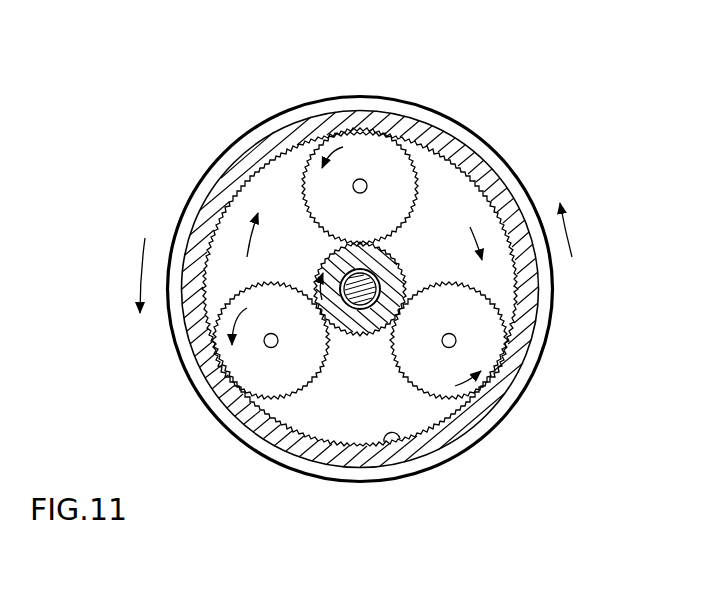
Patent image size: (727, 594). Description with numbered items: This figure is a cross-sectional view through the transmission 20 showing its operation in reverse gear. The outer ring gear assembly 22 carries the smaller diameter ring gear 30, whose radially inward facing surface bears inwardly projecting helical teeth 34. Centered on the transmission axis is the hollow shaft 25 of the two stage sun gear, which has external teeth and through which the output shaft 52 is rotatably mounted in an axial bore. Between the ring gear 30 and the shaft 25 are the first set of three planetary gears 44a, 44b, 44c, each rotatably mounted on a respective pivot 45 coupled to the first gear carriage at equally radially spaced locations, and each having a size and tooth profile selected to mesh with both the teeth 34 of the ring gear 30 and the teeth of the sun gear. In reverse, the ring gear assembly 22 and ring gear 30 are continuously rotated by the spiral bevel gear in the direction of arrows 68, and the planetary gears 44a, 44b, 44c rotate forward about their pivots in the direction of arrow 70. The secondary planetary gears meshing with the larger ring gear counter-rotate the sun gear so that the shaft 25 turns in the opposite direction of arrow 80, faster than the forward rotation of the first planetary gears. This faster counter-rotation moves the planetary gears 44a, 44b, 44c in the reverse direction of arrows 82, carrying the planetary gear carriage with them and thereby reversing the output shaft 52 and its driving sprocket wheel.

The transmission 20 is at (522, 117).
The ring gear assembly 22 is at (490, 440).
The hollow shaft 25 is at (382, 258).
The ring gear 30 is at (362, 463).
The helical teeth 34 is at (405, 452).
The planetary gear 44a is at (385, 150).
The planetary gear 44b is at (483, 332).
The planetary gear 44c is at (267, 387).
The pivot 45 is at (359, 179).
The output shaft 52 is at (360, 310).
The direction of rotation of ring gear assembly 68 is at (572, 240).
The direction of rotation of first planetary gears 70 is at (222, 325).
The direction of counter rotation of sun gear 80 is at (313, 282).
The reverse direction of planetary gear movement 82 is at (495, 203).